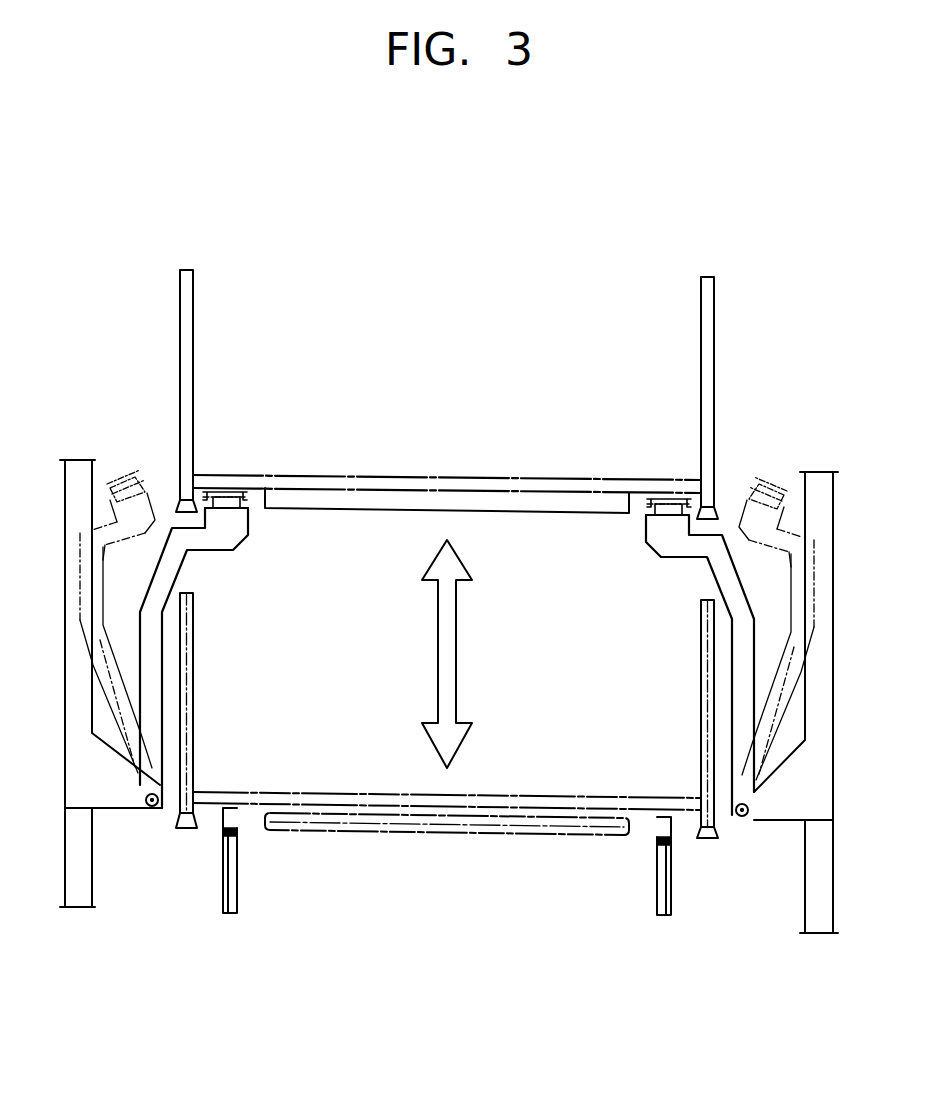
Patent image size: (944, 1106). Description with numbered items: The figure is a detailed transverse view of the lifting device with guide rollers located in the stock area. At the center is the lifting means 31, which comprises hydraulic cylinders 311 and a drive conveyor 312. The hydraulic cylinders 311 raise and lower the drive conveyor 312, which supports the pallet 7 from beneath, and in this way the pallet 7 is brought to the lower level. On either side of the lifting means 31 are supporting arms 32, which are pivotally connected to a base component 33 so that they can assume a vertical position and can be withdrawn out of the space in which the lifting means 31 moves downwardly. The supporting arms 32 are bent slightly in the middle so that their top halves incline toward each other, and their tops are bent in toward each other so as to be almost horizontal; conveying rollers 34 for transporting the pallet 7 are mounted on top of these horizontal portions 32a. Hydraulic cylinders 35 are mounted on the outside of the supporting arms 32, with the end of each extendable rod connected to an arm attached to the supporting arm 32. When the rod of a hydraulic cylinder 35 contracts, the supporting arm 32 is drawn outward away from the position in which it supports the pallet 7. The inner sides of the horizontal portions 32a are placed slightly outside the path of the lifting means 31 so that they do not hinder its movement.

The pallet 7 is at (442, 475).
The lifting means 31 is at (455, 871).
The hydraulic cylinders 311 is at (225, 867).
The drive conveyor 312 is at (232, 818).
The supporting arms 32 is at (447, 661).
The horizontal portions 32a is at (237, 525).
The base component 33 is at (118, 802).
The conveying rollers 34 is at (230, 490).
The hydraulic cylinders 35 is at (73, 650).